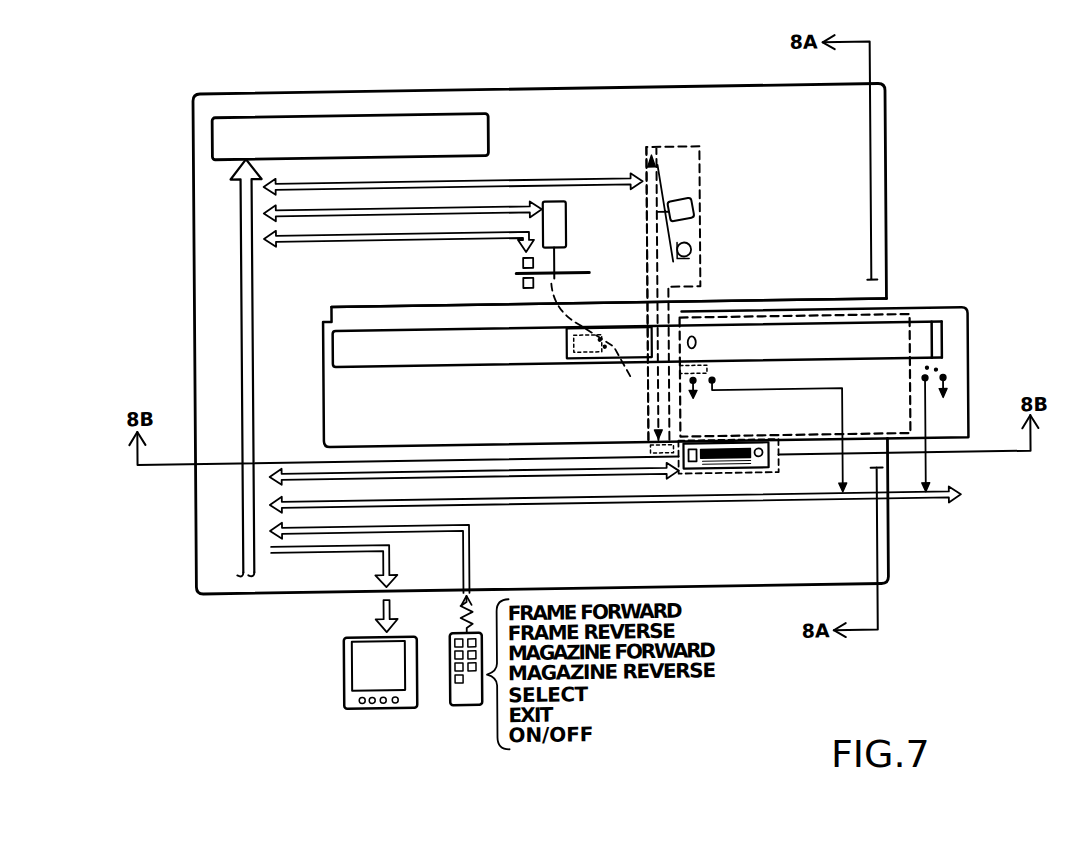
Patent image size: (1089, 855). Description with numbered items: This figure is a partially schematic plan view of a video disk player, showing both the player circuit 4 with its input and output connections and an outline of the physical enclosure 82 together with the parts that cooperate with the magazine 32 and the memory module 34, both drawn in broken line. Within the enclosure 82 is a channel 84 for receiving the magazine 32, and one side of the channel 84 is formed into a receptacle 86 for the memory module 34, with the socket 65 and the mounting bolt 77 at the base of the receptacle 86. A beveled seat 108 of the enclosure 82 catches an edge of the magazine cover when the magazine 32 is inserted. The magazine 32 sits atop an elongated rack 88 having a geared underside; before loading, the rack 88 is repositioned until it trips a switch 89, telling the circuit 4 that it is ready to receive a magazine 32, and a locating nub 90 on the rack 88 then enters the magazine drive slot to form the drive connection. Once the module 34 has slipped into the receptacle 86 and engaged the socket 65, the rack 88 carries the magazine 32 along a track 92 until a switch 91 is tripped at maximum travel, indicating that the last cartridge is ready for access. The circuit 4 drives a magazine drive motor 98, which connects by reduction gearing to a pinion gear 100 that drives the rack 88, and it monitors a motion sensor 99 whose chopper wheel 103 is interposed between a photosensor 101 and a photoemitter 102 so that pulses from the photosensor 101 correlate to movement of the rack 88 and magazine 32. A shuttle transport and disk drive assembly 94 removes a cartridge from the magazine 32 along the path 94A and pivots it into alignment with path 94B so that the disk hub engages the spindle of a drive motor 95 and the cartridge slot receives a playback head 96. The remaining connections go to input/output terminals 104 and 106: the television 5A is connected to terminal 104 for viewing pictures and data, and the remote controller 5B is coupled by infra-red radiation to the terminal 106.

The player circuit 4 is at (488, 136).
The enclosure 82 is at (887, 203).
The channel 84 is at (385, 450).
The beveled seat 108 is at (790, 309).
The track 92 is at (455, 371).
The rack 88 is at (785, 366).
The magazine 32 is at (908, 396).
The locating nub 90 is at (698, 347).
The switch 91 is at (712, 376).
The switch 89 is at (940, 381).
The shuttle transport and disk drive assembly 94 is at (662, 155).
The shuttle path 94A is at (655, 412).
The aligned path 94B is at (668, 240).
The drive motor 95 is at (683, 210).
The playback head 96 is at (692, 262).
The magazine drive motor 98 is at (565, 218).
The motion sensor 99 is at (568, 268).
The pinion gear 100 is at (610, 365).
The photosensor 101 is at (520, 268).
The photoemitter 102 is at (520, 288).
The chopper wheel 103 is at (588, 281).
The receptacle 86 is at (780, 479).
The mounting bolt 77 is at (690, 478).
The socket 65 is at (740, 478).
The memory module 34 is at (760, 481).
The input/output terminal 104 is at (385, 588).
The input/output terminal 106 is at (468, 594).
The television 5A is at (340, 667).
The remote controller 5B is at (462, 711).